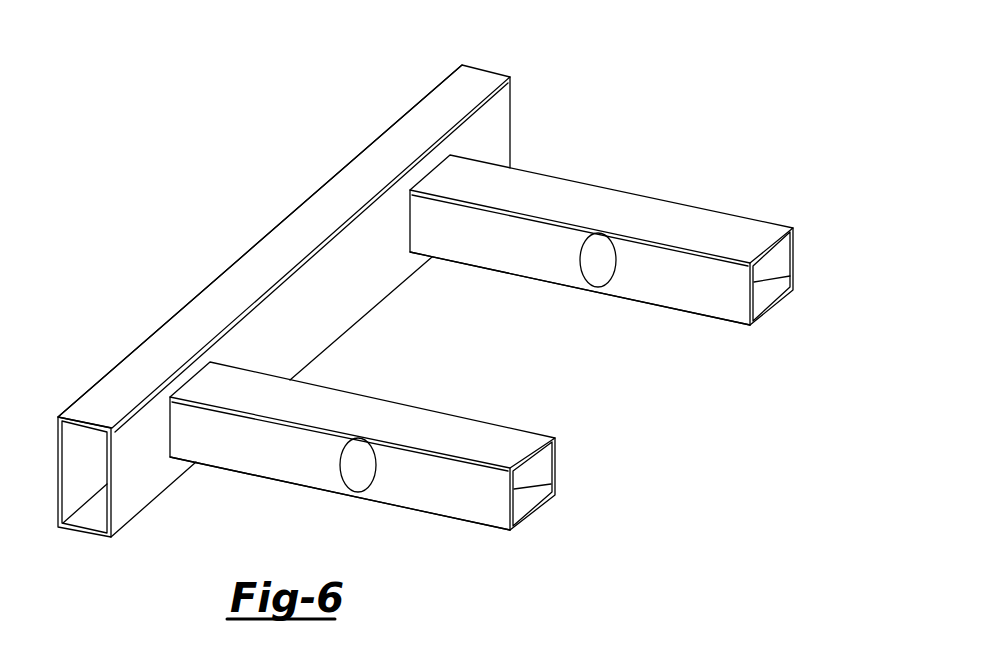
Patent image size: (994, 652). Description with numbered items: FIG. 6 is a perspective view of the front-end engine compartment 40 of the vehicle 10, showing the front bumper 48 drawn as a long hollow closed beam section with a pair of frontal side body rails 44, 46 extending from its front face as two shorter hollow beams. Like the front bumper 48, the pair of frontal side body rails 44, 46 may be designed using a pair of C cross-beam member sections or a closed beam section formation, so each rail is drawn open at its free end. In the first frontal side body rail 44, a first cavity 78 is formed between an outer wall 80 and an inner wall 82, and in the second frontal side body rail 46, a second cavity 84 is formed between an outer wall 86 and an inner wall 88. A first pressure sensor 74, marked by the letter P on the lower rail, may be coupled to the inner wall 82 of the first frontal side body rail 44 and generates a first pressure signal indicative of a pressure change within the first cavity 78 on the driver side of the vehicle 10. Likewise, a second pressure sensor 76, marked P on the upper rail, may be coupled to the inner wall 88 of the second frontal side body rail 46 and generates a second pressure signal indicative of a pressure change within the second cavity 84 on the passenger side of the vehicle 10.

The vehicle 10 is at (459, 290).
The front-end engine compartment 40 is at (319, 284).
The front bumper 48 is at (347, 163).
The first frontal side body rail 44 is at (395, 467).
The second frontal side body rail 46 is at (635, 255).
The first pressure sensor 74 is at (340, 463).
The second pressure sensor 76 is at (580, 256).
The first cavity 78 is at (524, 502).
The outer wall 80 is at (435, 495).
The inner wall 82 is at (541, 464).
The second cavity 84 is at (760, 293).
The outer wall 86 is at (673, 288).
The inner wall 88 is at (782, 256).